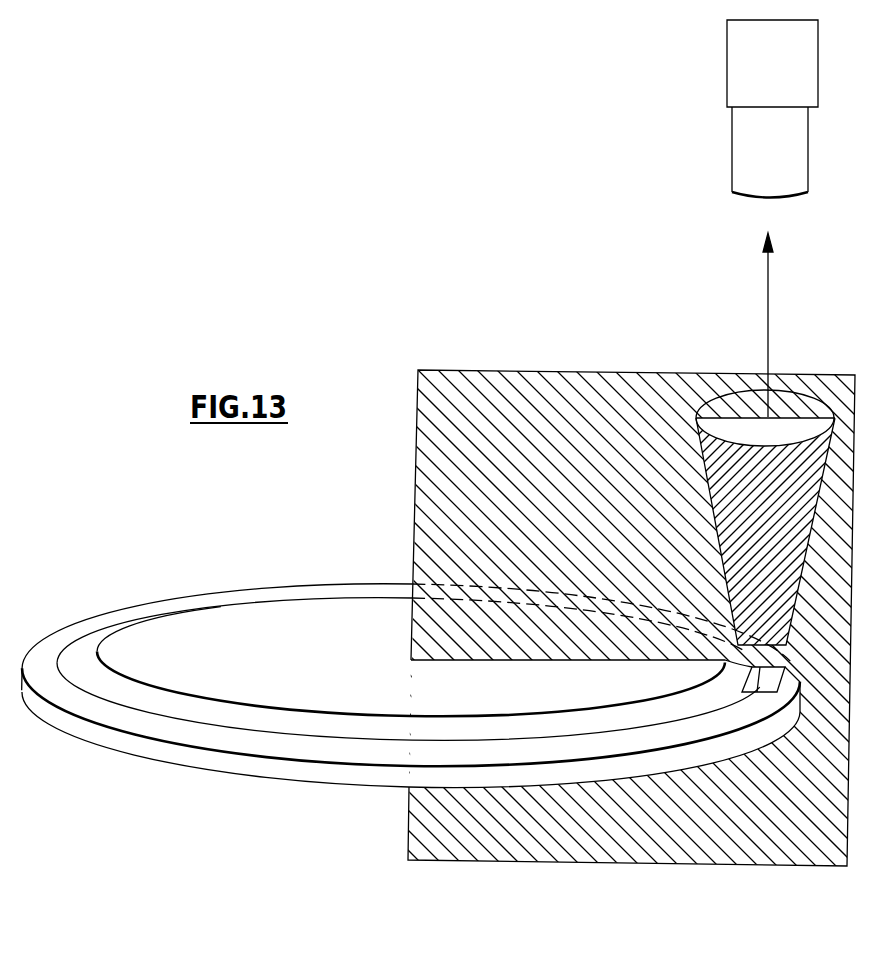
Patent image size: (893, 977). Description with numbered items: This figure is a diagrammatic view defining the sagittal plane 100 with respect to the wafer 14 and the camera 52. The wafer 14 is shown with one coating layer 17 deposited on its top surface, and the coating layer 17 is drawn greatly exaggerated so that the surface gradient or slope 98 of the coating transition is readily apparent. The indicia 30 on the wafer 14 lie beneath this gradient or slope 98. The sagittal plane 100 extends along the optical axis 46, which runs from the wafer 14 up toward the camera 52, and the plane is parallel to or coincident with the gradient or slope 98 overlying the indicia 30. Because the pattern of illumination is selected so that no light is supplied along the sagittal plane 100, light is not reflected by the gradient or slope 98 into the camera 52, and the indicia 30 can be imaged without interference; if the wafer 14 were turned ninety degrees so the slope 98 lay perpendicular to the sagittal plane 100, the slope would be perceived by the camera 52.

The sagittal plane 100 is at (455, 372).
The wafer 14 is at (117, 755).
The coating layer 17 is at (173, 633).
The gradient or slope 98 is at (677, 690).
The indicia 30 is at (757, 693).
The optical axis 46 is at (768, 283).
The camera 52 is at (728, 68).